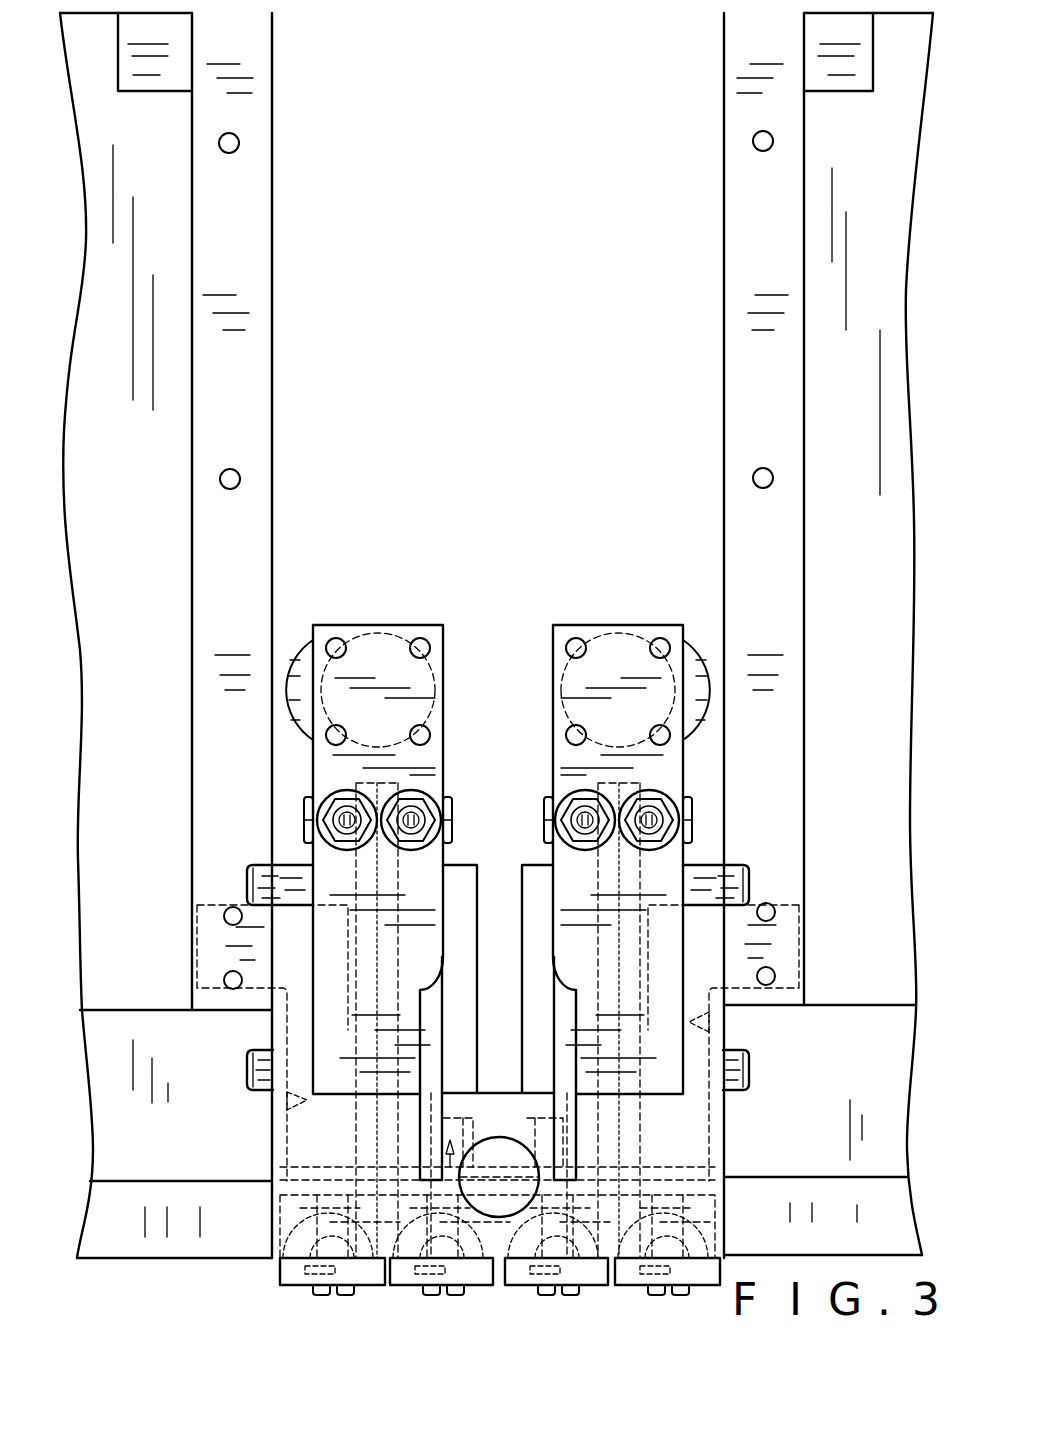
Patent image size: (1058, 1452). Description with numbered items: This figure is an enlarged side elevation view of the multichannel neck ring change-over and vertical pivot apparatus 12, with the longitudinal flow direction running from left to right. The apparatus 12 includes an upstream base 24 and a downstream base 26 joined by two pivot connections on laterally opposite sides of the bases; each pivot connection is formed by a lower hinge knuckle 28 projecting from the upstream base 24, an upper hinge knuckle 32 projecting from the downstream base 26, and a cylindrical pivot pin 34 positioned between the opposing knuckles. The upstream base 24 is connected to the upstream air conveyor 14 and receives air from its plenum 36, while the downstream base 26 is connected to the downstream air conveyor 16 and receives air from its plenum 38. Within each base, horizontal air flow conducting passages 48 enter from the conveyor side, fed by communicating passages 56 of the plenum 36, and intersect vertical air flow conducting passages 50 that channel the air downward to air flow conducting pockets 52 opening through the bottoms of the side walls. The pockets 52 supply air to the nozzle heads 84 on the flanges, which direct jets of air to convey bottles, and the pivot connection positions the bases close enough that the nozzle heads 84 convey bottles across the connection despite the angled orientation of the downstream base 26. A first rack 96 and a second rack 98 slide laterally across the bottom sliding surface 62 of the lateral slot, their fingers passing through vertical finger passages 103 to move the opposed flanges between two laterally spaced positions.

The change-over and pivot apparatus 12 is at (473, 520).
The upstream air conveyor 14 is at (160, 183).
The downstream air conveyor 16 is at (840, 215).
The upstream base 24 is at (272, 1128).
The downstream base 26 is at (727, 1148).
The lower hinge knuckles 28 is at (523, 1230).
The upper hinge knuckles 32 is at (458, 1108).
The cylindrical pivot pin 34 is at (503, 1187).
The plenum of the upstream air conveyor 36 is at (92, 505).
The plenum of the downstream air conveyor 38 is at (885, 495).
The horizontal air flow conducting passages 48 is at (287, 912).
The vertical air flow conducting passages 50 is at (285, 1104).
The air flow conducting pockets 52 is at (447, 1175).
The communicating passages 56 is at (215, 988).
The bottom sliding surface 62 is at (412, 945).
The nozzle heads 84 is at (292, 1272).
The first rack 96 is at (380, 1000).
The second rack 98 is at (352, 902).
The vertical finger passages 103 is at (375, 1040).